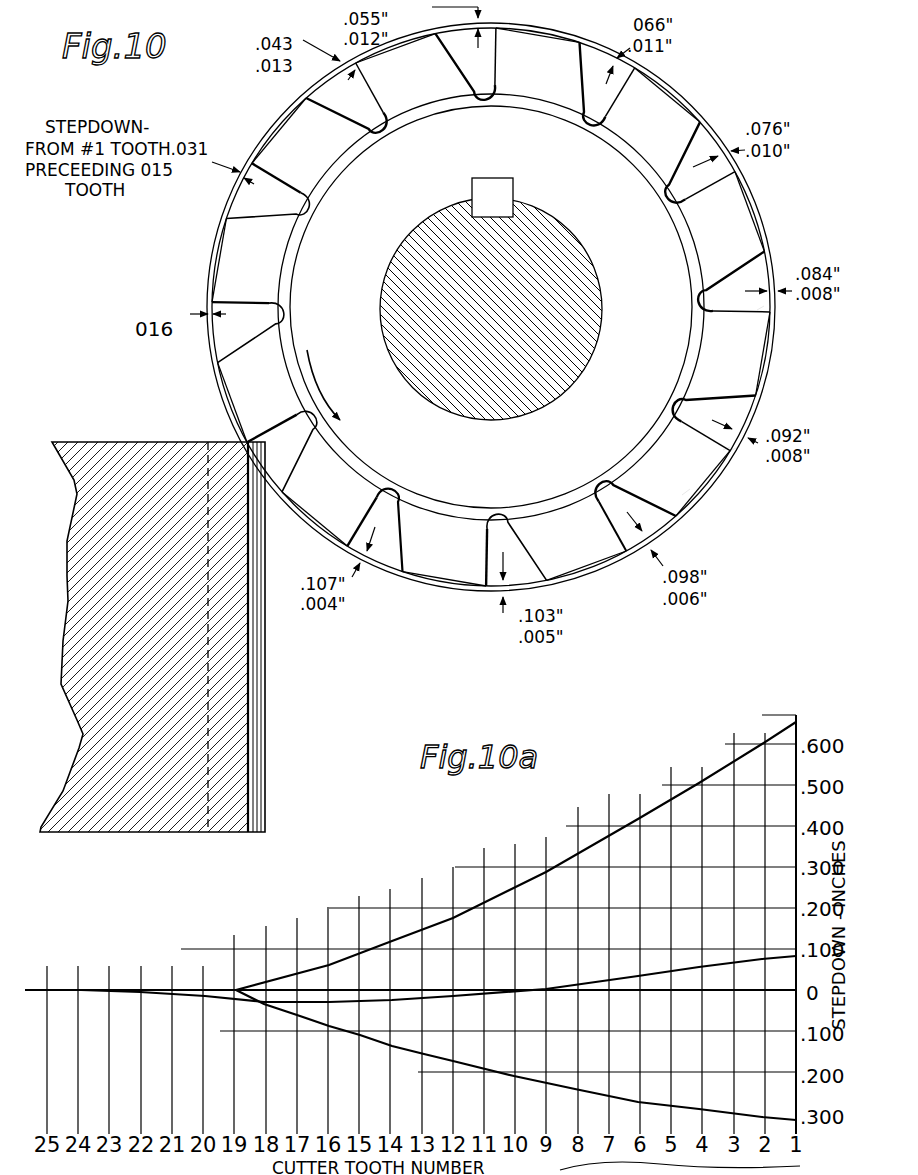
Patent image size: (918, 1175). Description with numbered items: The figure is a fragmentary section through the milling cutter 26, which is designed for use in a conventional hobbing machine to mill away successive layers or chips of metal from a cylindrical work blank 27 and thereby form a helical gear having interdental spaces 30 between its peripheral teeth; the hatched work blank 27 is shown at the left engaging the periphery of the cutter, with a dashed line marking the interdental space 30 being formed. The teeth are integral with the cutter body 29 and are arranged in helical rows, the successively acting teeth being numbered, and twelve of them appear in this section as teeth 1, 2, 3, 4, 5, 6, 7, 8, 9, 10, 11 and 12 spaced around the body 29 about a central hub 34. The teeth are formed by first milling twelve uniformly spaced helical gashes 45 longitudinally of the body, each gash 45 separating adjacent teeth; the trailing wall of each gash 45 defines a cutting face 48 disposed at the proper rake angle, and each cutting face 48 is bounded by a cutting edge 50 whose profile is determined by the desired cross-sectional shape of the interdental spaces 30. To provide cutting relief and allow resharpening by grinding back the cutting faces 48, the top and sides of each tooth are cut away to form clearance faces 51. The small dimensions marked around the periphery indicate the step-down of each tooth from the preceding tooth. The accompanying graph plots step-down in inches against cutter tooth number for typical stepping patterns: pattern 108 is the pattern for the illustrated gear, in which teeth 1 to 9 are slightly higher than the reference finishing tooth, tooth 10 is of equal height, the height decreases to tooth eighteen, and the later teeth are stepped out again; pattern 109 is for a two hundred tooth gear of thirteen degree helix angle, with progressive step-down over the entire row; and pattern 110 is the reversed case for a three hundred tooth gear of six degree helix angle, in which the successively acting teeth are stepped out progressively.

In FIG. 10, the cutter tooth 1 is at (238, 387).
In FIG. 10, the cutter tooth 2 is at (231, 262).
In FIG. 10, the cutter tooth 3 is at (299, 127).
In FIG. 10, the cutter tooth 4 is at (432, 41).
In FIG. 10, the cutter tooth 5 is at (546, 37).
In FIG. 10, the cutter tooth 6 is at (684, 102).
In FIG. 10, the cutter tooth 7 is at (756, 223).
In FIG. 10, the cutter tooth 8 is at (761, 358).
In FIG. 10, the cutter tooth 9 is at (697, 469).
In FIG. 10, the cutter tooth 10 is at (588, 547).
In FIG. 10, the cutter tooth 11 is at (452, 558).
In FIG. 10, the cutter tooth 12 is at (326, 496).
In FIG. 10, the milling cutter 26 is at (252, 133).
In FIG. 10, the work blank 27 is at (124, 442).
In FIG. 10, the cutter body 29 is at (537, 113).
In FIG. 10, the interdental space 30 is at (215, 442).
In FIG. 10, the arbor / hub 34 is at (552, 228).
In FIG. 10, the helical gash 45 is at (740, 409).
In FIG. 10, the cutting face 48 is at (757, 310).
In FIG. 10, the cutting edge 50 is at (723, 451).
In FIG. 10, the clearance face 51 is at (682, 496).
In FIG. 10A, the stepping pattern 108 is at (584, 981).
In FIG. 10A, the stepping pattern 109 is at (592, 845).
In FIG. 10A, the stepping pattern 110 is at (381, 1044).